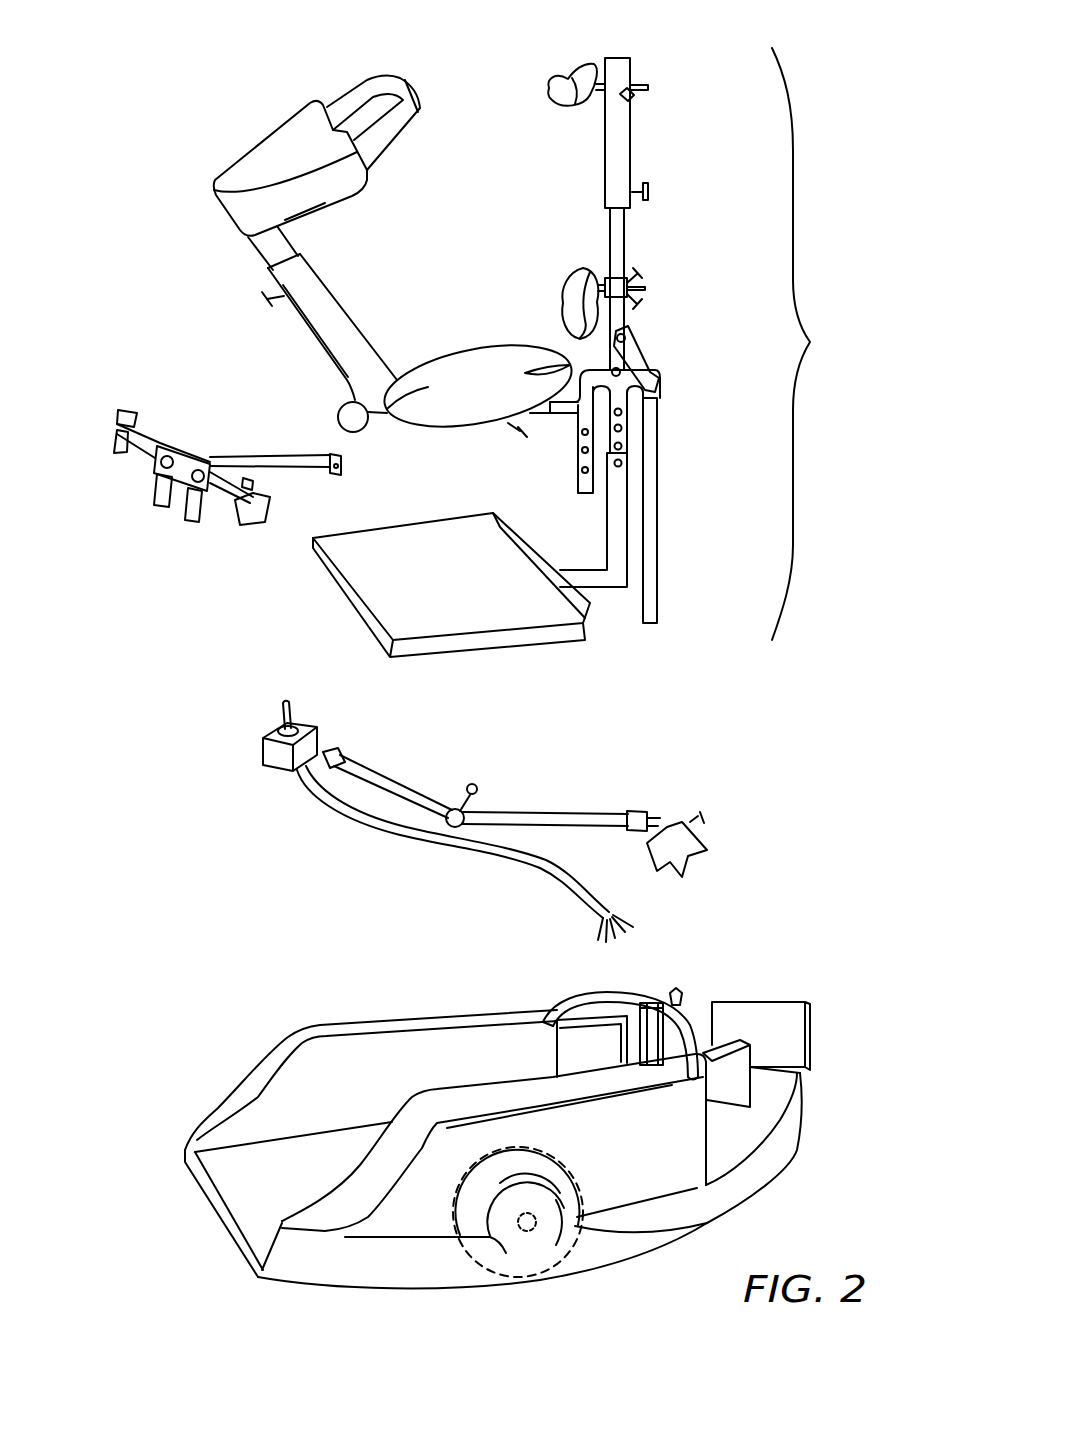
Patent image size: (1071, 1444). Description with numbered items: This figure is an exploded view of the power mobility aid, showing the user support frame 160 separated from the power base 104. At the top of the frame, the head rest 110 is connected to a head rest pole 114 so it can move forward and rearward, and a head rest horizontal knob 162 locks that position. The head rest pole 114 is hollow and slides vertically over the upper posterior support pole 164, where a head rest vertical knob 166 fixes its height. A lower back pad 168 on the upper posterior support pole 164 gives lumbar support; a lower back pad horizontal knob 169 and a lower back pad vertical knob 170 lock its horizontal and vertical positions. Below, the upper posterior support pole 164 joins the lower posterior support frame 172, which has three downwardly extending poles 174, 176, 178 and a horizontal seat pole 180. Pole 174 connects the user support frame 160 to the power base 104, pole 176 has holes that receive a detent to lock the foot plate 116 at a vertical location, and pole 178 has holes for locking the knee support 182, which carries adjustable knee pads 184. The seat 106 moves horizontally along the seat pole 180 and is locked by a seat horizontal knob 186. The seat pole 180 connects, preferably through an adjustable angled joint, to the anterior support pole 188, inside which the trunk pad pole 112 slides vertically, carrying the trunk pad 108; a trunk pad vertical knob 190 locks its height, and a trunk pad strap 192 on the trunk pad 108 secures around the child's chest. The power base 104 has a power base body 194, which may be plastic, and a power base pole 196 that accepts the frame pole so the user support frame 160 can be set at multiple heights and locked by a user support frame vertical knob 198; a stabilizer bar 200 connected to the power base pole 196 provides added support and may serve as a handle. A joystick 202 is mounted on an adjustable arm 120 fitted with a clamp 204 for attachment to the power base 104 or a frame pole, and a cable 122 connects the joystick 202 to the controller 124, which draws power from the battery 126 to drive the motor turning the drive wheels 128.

The power base 104 is at (838, 1052).
The seat 106 is at (503, 365).
The trunk pad 108 is at (235, 203).
The head rest 110 is at (583, 70).
The trunk pad pole 112 is at (275, 247).
The head rest pole 114 is at (622, 129).
The foot plate 116 is at (352, 605).
The adjustable arm 120 is at (378, 770).
The cable 122 is at (366, 823).
The controller 124 is at (790, 1010).
The battery 126 is at (555, 1025).
The drive wheels 128 is at (580, 1214).
The user support frame 160 is at (815, 344).
The head rest horizontal knob 162 is at (634, 97).
The upper posterior support pole 164 is at (620, 229).
The head rest vertical knob 166 is at (647, 193).
The lower back pad 168 is at (578, 270).
The lower back pad horizontal knob 169 is at (641, 271).
The lower back pad vertical knob 170 is at (641, 306).
The lower posterior support frame 172 is at (622, 380).
The pole 174 is at (651, 463).
The pole 176 is at (623, 426).
The pole 178 is at (578, 464).
The horizontal seat pole 180 is at (560, 413).
The knee support 182 is at (183, 462).
The knee pads 184 is at (113, 453).
The seat horizontal knob 186 is at (511, 436).
The anterior support pole 188 is at (336, 332).
The trunk pad vertical knob 190 is at (268, 300).
The trunk pad strap 192 is at (377, 83).
The power base body 194 is at (768, 1170).
The power base pole 196 is at (648, 1028).
The user support frame vertical knob 198 is at (675, 993).
The stabilizer bar 200 is at (687, 1020).
The joystick 202 is at (262, 742).
The clamp 204 is at (695, 851).